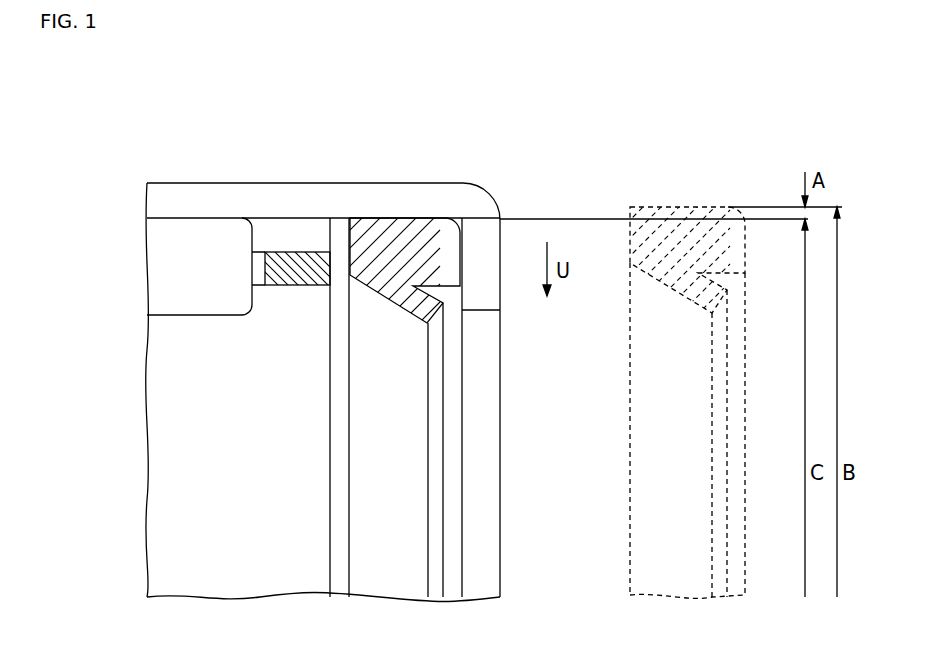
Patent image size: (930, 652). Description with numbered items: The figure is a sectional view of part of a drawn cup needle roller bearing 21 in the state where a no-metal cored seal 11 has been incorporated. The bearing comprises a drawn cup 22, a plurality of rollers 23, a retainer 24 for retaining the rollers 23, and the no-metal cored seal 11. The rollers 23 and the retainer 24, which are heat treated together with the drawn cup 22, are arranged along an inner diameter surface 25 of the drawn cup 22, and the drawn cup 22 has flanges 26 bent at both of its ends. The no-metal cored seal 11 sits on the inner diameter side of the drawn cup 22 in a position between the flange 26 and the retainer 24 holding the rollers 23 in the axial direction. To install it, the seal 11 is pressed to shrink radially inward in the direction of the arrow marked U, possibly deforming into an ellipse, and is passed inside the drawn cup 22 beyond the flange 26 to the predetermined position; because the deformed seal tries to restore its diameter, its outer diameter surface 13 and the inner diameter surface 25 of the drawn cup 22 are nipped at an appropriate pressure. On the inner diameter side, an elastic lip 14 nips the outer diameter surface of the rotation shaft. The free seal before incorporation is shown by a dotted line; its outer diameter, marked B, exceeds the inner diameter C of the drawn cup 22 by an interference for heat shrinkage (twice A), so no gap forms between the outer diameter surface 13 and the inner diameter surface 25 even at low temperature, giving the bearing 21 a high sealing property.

The no-metal cored seal 11 is at (370, 237).
The outer diameter surface 13 is at (397, 218).
The lip 14 is at (430, 312).
The drawn cup needle roller bearing 21 is at (483, 106).
The drawn cup 22 is at (227, 197).
The rollers 23 is at (191, 243).
The retainer 24 is at (287, 262).
The inner diameter surface 25 is at (302, 221).
The flange 26 is at (483, 259).